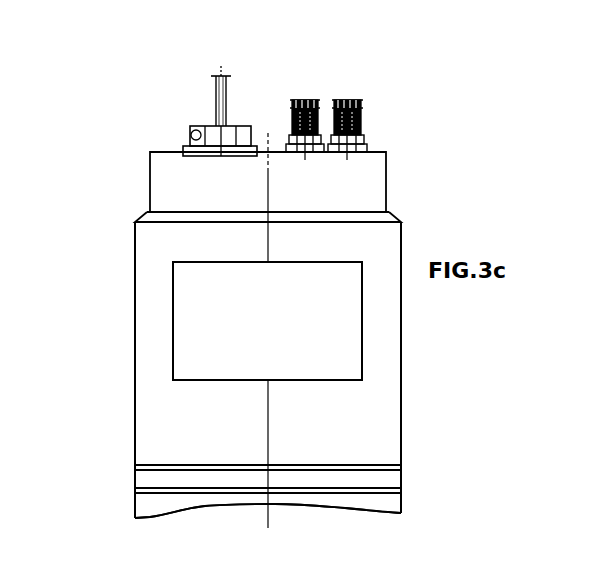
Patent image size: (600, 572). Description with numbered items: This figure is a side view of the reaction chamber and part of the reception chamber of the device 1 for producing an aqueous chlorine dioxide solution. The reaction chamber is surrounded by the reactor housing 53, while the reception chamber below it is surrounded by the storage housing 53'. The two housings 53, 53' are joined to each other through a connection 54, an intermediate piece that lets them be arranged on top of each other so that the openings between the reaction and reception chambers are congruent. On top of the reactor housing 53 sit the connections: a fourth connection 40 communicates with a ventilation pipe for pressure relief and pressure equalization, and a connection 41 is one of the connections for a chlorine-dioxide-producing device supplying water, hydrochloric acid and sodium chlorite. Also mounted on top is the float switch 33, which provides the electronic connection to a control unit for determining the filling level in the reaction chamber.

The device 1 is at (133, 253).
The float switch 33 is at (186, 140).
The fourth connection 40 is at (293, 100).
The connection 41 is at (352, 104).
The reactor housing 53 is at (315, 433).
The storage housing 53' is at (326, 515).
The connection 54 is at (154, 485).